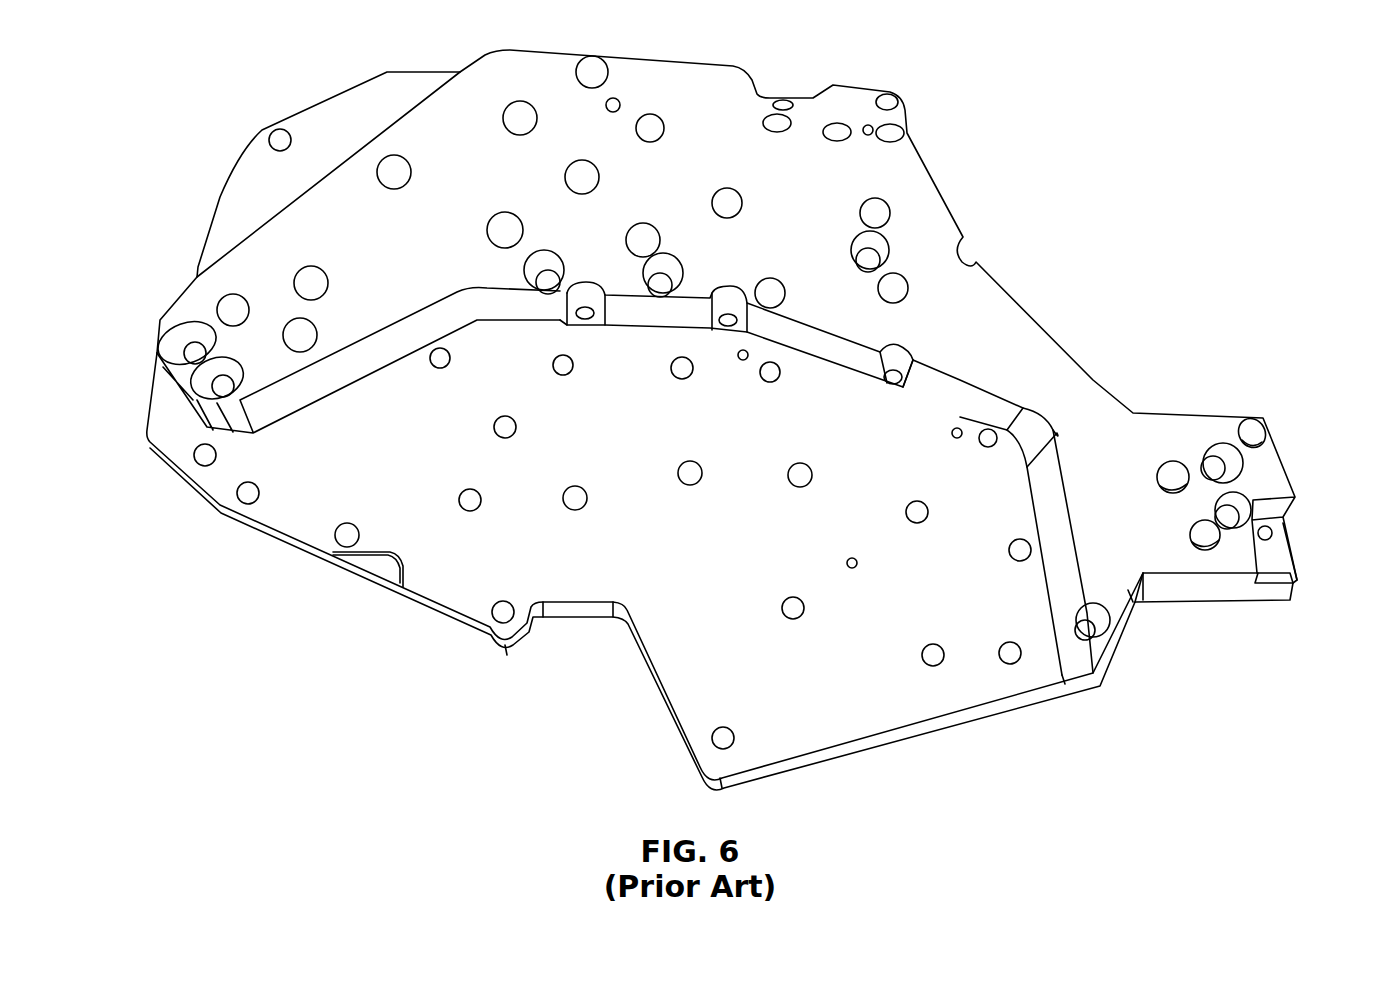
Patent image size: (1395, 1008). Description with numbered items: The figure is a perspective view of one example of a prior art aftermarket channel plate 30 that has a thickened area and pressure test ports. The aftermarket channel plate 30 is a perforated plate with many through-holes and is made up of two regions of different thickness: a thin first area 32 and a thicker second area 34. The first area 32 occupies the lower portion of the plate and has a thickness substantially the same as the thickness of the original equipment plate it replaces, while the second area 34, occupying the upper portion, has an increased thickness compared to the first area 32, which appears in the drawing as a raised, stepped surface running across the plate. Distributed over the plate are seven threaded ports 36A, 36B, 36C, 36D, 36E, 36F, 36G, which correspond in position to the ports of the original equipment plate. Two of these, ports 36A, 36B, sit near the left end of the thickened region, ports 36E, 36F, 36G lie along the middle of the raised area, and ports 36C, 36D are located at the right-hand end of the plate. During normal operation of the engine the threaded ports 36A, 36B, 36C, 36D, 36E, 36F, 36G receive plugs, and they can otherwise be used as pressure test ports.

The aftermarket channel plate 30 is at (313, 557).
The first area 32 is at (985, 640).
The second area 34 is at (692, 85).
The threaded port 36A is at (167, 345).
The threaded port 36B is at (160, 362).
The threaded port 36C is at (1265, 428).
The threaded port 36D is at (1245, 505).
The threaded port 36E is at (546, 291).
The threaded port 36F is at (650, 278).
The threaded port 36G is at (859, 266).